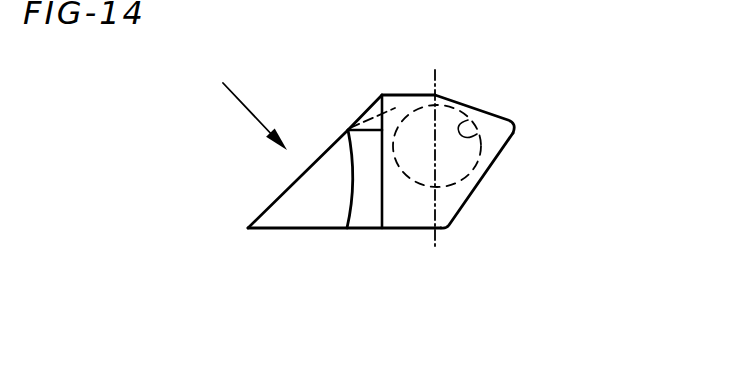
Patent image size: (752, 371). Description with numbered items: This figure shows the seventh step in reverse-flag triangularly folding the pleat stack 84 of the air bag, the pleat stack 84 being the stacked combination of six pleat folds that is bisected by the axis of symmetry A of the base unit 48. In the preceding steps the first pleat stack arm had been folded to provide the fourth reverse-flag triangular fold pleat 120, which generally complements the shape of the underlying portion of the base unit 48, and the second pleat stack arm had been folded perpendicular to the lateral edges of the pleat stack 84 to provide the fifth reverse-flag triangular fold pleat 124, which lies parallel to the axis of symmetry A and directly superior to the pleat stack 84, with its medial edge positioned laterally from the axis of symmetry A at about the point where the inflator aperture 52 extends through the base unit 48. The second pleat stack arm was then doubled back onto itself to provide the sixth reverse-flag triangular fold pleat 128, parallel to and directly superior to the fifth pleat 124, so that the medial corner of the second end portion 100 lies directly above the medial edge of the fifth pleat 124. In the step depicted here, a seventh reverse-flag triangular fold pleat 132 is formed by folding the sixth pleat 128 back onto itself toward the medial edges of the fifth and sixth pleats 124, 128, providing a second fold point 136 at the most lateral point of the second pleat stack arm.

The second fold point 136 is at (230, 228).
The seventh reverse-flag triangular fold pleat 132 is at (310, 207).
The fifth reverse-flag triangular fold pleat 124 is at (368, 112).
The second end portion 100 is at (355, 203).
The sixth reverse-flag triangular fold pleat 128 is at (372, 212).
The pleat stack 84 is at (405, 95).
The inflator aperture 52 is at (485, 128).
The fourth reverse-flag triangular fold pleat 120 is at (460, 197).
The base unit 48 is at (423, 238).
The axis of symmetry A is at (438, 88).